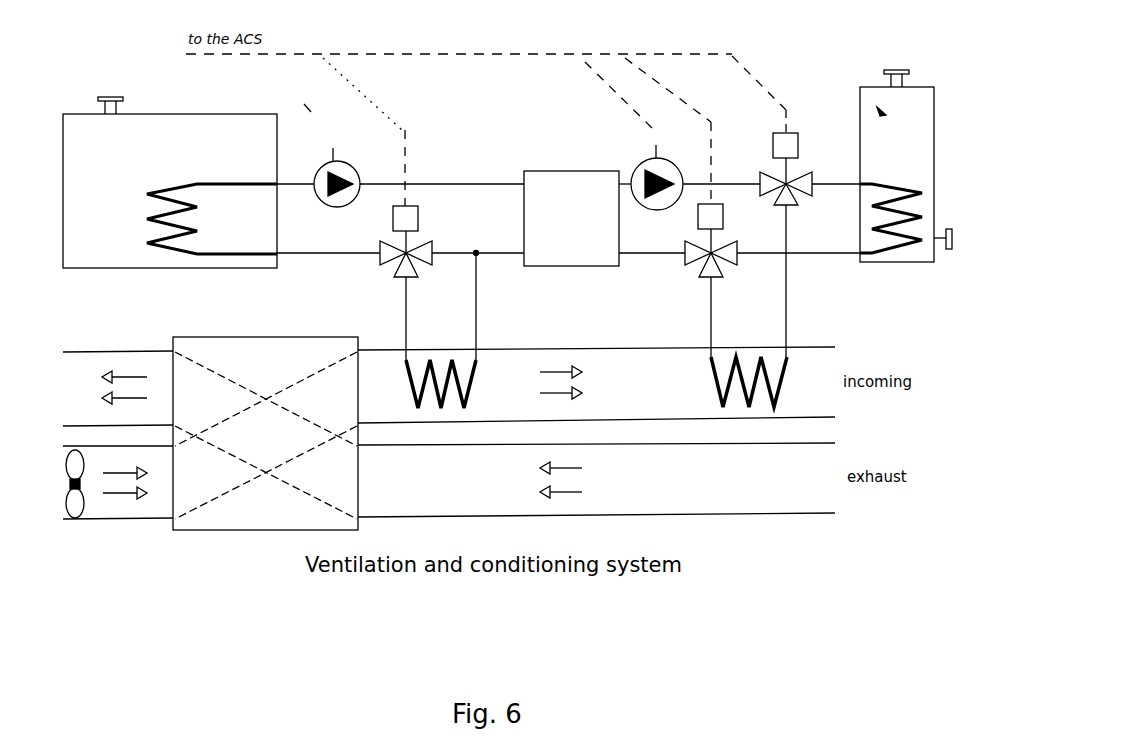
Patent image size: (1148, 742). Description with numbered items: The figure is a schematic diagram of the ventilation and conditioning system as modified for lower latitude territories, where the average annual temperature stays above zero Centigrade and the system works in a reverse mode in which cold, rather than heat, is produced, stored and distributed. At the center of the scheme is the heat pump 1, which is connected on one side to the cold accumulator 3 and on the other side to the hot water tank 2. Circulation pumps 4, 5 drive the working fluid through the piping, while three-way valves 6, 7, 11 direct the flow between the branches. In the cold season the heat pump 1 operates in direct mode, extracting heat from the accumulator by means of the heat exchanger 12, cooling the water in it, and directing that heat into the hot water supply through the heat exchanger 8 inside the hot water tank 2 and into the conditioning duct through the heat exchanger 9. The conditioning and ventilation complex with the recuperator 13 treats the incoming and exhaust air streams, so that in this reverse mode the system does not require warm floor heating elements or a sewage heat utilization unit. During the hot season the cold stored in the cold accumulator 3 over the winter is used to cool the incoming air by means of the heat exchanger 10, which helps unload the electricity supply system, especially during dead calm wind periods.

The heat pump 1 is at (556, 181).
The hot water tank 2 is at (812, 50).
The cold accumulator 3 is at (196, 126).
The circulation pump 4 is at (340, 163).
The circulation pump 5 is at (664, 164).
The three-way valve 6 is at (689, 250).
The three-way valve 7 is at (795, 138).
The heat exchanger 8 is at (906, 250).
The heat exchanger 9 is at (739, 349).
The heat exchanger 10 is at (429, 352).
The three-way valve 11 is at (384, 248).
The heat exchanger 12 is at (170, 262).
The recuperator 13 is at (257, 522).